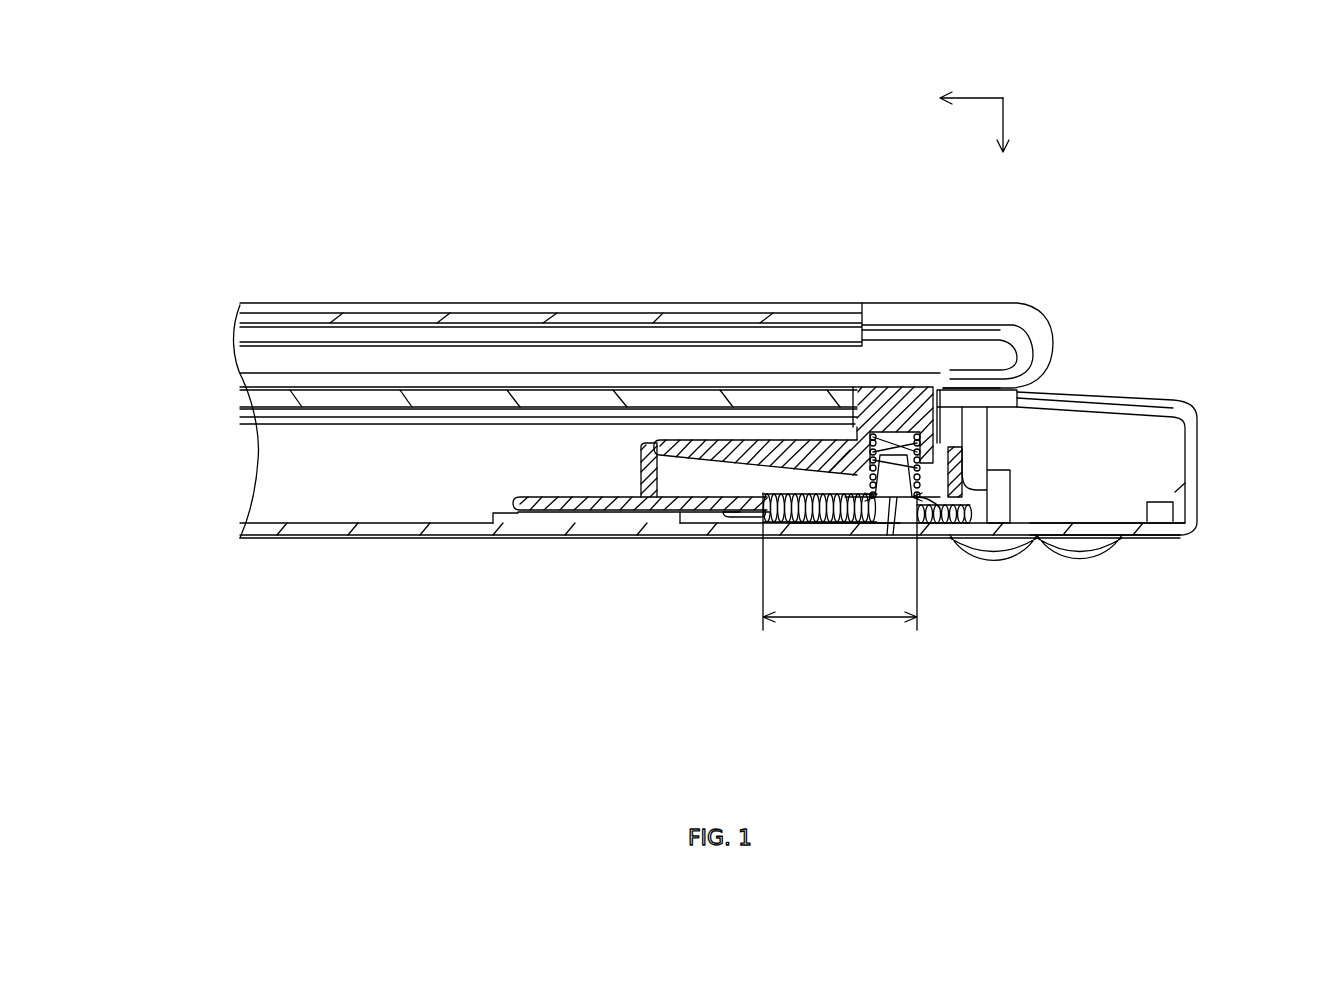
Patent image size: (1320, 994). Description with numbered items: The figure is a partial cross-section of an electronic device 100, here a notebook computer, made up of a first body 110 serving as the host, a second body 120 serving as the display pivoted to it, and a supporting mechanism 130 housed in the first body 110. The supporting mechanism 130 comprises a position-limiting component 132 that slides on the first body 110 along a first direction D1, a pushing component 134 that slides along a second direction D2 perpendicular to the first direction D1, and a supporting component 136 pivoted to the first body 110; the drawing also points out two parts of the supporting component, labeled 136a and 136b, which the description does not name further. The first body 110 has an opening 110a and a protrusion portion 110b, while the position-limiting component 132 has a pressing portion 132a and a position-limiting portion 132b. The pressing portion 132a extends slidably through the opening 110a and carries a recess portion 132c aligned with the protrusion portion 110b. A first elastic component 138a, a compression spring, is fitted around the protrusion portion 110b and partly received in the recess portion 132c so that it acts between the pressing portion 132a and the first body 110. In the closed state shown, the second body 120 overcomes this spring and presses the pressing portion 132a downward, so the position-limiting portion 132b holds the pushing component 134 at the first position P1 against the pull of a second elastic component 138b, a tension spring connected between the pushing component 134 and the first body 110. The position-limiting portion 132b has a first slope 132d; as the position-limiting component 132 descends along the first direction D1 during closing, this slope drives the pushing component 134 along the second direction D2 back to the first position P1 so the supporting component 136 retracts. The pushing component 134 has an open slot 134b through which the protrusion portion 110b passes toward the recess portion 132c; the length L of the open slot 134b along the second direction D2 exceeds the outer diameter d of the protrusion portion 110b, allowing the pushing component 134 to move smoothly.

The electronic device 100 is at (1275, 699).
The first body 110 is at (712, 568).
The opening 110a is at (944, 397).
The protrusion portion 110b is at (842, 524).
The second body 120 is at (391, 309).
The supporting mechanism 130 is at (969, 664).
The position-limiting component 132 is at (750, 393).
The pressing portion 132a is at (888, 410).
The position-limiting portion 132b is at (765, 433).
The recess portion 132c is at (820, 432).
The first slope 132d is at (693, 465).
The pushing component 134 is at (547, 503).
The open slot 134b is at (775, 503).
The supporting component 136 is at (1067, 374).
The inner wall of housing 136a is at (978, 442).
The outer housing 136b is at (1124, 407).
The first elastic component 138a is at (945, 507).
The second elastic component 138b is at (757, 513).
The first position P1 is at (718, 485).
The first direction D1 is at (1003, 120).
The second direction D2 is at (979, 97).
The outer diameter d is at (897, 490).
The length L is at (840, 581).